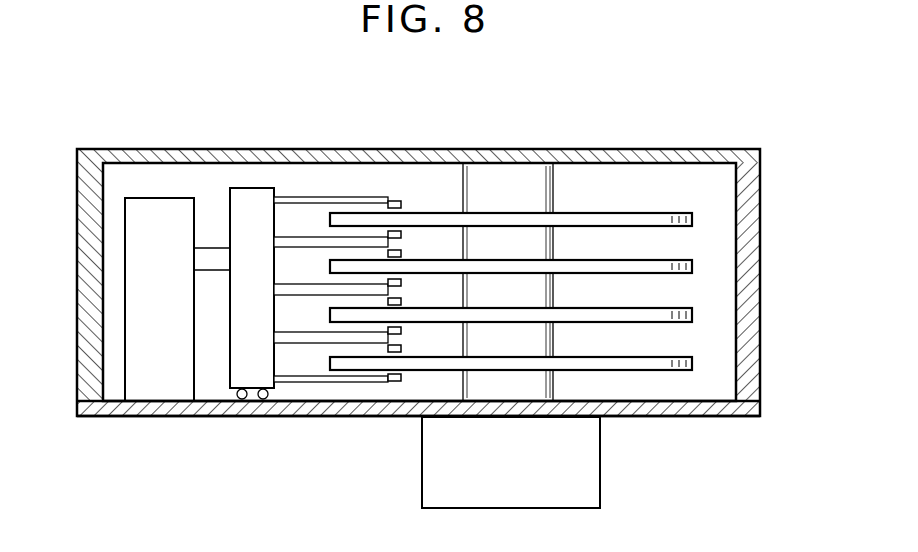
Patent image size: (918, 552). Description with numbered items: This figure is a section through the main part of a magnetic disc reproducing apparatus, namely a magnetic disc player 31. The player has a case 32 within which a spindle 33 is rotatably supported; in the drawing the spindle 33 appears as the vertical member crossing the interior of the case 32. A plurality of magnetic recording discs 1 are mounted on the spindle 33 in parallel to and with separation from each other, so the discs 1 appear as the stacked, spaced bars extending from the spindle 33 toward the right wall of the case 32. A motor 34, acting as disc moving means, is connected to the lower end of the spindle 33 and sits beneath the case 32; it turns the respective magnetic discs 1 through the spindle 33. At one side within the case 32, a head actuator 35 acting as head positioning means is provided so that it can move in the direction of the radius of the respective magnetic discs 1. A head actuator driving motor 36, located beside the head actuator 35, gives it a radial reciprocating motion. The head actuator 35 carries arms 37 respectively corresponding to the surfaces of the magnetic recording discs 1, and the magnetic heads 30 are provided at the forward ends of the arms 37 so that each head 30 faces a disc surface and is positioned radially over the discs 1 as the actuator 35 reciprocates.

The magnetic recording disc 1 is at (691, 260).
The magnetic head 30 is at (401, 206).
The magnetic disc player 31 is at (633, 150).
The case 32 is at (743, 406).
The spindle 33 is at (555, 202).
The motor 34 is at (430, 468).
The head actuator 35 is at (230, 208).
The head actuator driving motor 36 is at (164, 198).
The arm 37 is at (331, 199).